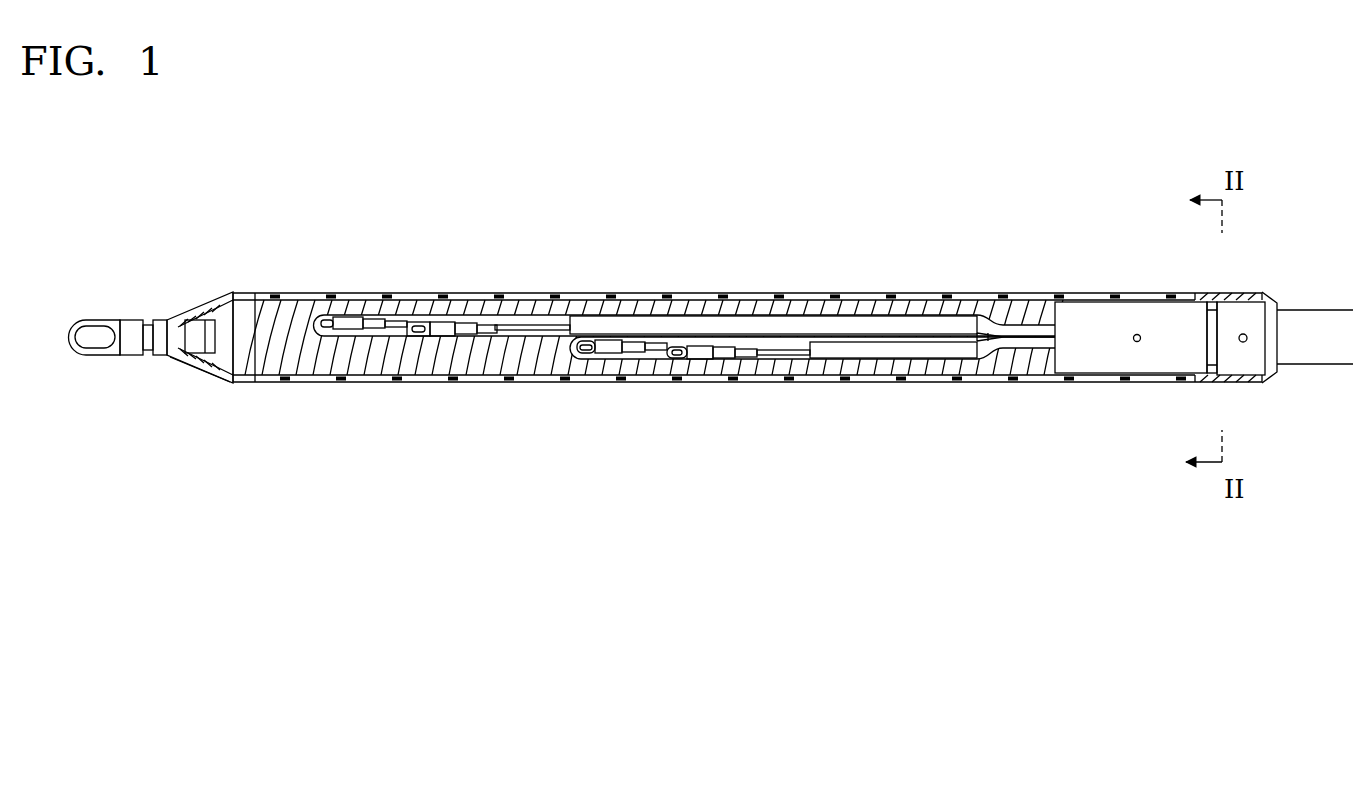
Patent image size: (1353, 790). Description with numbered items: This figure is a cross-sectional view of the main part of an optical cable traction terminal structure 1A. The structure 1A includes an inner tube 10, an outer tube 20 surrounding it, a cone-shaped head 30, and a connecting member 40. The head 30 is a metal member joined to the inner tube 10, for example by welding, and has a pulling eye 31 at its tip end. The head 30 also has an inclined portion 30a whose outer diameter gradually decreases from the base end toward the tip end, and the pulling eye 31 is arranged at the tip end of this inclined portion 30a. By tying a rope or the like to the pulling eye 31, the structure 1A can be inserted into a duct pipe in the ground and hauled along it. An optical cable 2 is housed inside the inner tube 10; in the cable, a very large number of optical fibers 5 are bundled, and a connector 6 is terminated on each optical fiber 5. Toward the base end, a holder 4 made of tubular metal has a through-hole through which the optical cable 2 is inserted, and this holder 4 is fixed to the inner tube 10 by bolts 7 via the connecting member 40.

The optical cable traction terminal structure 1A is at (860, 196).
The optical cable 2 is at (883, 352).
The holder 4 is at (1150, 375).
The optical fiber 5 is at (528, 332).
The connector 6 is at (437, 332).
The bolt 7 is at (1247, 292).
The inner tube 10 is at (296, 300).
The outer tube 20 is at (437, 292).
The cone-shaped head 30 is at (192, 288).
The inclined portion 30a is at (200, 365).
The pulling eye 31 is at (97, 318).
The connecting member 40 is at (1207, 300).